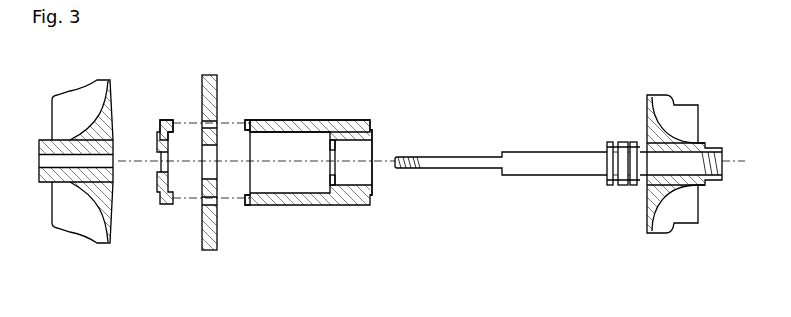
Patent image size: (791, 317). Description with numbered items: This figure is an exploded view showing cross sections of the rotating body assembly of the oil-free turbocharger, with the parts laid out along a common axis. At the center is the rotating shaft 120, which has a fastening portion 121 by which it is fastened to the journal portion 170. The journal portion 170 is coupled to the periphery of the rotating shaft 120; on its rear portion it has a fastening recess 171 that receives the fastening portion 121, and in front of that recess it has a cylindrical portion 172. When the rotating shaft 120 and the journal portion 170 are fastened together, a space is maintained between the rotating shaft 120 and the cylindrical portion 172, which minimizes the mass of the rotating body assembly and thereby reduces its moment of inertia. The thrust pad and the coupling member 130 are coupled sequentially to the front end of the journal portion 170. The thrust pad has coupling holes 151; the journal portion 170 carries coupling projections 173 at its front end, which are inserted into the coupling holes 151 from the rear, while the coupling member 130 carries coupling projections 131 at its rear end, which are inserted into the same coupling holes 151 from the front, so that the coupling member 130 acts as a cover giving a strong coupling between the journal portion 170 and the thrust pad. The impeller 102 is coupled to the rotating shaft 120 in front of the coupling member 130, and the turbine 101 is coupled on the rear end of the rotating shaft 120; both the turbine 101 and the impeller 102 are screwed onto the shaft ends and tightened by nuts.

The turbine 101 is at (668, 125).
The impeller 102 is at (91, 122).
The rotating shaft 120 is at (546, 173).
The fastening portion 121 is at (623, 187).
The coupling member 130 is at (158, 135).
The coupling projections 131 is at (172, 118).
The coupling holes 151 is at (201, 117).
The journal portion 170 is at (355, 206).
The fastening recess 171 is at (377, 128).
The cylindrical portion 172 is at (302, 118).
The coupling projections 173 is at (243, 118).